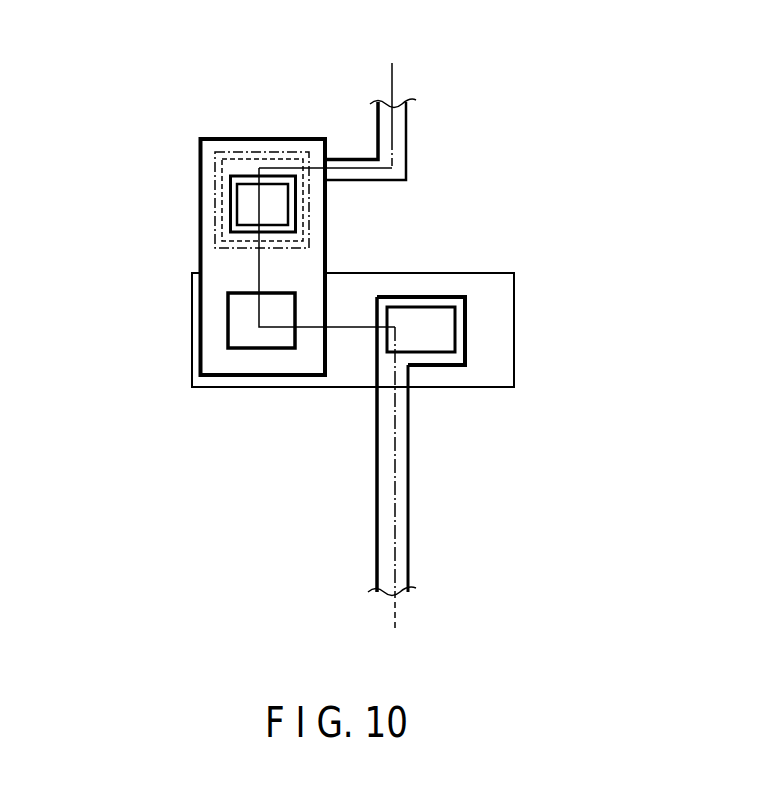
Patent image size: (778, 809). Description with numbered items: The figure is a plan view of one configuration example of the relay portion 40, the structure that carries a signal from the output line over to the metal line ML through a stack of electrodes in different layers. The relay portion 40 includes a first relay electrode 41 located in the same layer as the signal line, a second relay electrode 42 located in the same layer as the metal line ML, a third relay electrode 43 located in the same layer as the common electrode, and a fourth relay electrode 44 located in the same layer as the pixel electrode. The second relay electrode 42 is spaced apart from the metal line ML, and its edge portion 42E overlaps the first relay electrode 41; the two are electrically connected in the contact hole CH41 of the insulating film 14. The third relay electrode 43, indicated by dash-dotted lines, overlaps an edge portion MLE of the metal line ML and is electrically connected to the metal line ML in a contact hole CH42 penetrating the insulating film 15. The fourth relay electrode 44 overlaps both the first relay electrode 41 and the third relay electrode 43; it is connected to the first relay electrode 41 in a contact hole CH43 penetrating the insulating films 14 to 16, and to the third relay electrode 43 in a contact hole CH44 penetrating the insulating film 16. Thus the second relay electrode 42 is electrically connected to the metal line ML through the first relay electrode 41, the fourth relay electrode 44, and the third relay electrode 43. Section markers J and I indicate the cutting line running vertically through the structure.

The relay portion 40 is at (127, 129).
The fourth relay electrode 44 is at (327, 242).
The third relay electrode 43 is at (310, 197).
The edge portion of the metal line MLE is at (240, 158).
The contact hole CH42 is at (230, 187).
The insulating film 15 is at (263, 204).
The contact hole CH44 is at (236, 212).
The insulating film 16 is at (262, 204).
The contact hole CH43 is at (227, 325).
The metal line ML is at (407, 122).
The section line J is at (390, 102).
The first relay electrode 41 is at (514, 387).
The edge portion of the second relay electrode 42E is at (457, 297).
The contact hole CH41 is at (455, 326).
The insulating film 14 is at (421, 329).
The second relay electrode 42 is at (408, 527).
The section line I is at (394, 494).